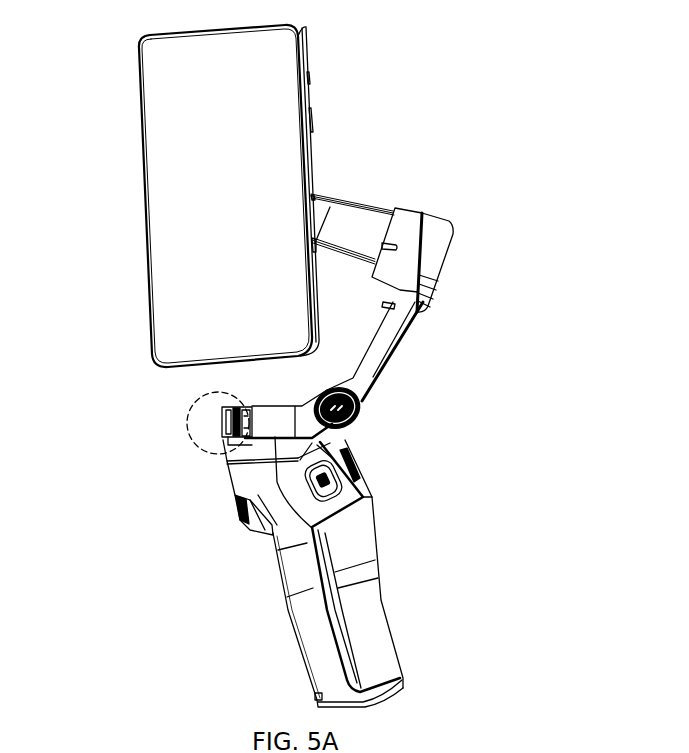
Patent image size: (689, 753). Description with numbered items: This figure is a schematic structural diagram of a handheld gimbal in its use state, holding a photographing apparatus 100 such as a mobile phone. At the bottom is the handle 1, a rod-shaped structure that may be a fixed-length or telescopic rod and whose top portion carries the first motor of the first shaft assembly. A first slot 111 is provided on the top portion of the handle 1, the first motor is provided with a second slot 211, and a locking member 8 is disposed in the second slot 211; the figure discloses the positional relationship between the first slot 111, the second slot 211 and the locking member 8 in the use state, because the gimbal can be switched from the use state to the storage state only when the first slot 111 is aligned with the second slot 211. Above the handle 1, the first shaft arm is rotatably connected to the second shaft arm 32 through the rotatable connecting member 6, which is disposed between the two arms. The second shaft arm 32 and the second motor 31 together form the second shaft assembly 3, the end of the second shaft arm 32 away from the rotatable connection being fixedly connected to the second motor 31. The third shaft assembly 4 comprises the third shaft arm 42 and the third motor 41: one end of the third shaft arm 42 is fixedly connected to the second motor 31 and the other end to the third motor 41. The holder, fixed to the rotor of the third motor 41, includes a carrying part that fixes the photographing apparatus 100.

The photographing apparatus 100 is at (162, 192).
The third shaft arm 42 is at (347, 218).
The second motor 31 is at (397, 262).
The second shaft arm 32 is at (407, 317).
The second shaft assembly 3 is at (438, 304).
The rotatable connecting member 6 is at (353, 413).
The third shaft assembly 4 is at (367, 403).
The third motor 41 is at (363, 477).
The locking member 8 is at (223, 410).
The second slot 211 is at (222, 422).
The first slot 111 is at (227, 440).
The handle 1 is at (297, 612).